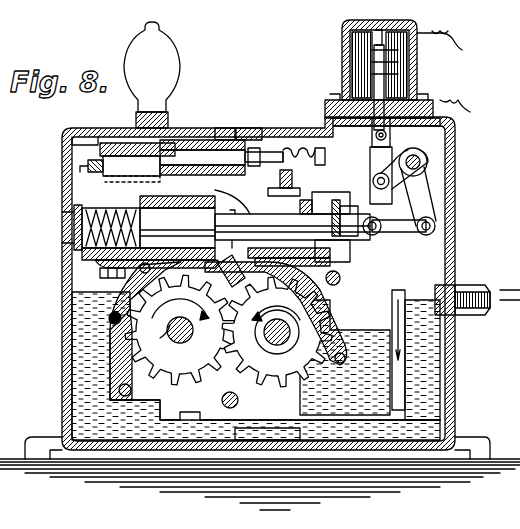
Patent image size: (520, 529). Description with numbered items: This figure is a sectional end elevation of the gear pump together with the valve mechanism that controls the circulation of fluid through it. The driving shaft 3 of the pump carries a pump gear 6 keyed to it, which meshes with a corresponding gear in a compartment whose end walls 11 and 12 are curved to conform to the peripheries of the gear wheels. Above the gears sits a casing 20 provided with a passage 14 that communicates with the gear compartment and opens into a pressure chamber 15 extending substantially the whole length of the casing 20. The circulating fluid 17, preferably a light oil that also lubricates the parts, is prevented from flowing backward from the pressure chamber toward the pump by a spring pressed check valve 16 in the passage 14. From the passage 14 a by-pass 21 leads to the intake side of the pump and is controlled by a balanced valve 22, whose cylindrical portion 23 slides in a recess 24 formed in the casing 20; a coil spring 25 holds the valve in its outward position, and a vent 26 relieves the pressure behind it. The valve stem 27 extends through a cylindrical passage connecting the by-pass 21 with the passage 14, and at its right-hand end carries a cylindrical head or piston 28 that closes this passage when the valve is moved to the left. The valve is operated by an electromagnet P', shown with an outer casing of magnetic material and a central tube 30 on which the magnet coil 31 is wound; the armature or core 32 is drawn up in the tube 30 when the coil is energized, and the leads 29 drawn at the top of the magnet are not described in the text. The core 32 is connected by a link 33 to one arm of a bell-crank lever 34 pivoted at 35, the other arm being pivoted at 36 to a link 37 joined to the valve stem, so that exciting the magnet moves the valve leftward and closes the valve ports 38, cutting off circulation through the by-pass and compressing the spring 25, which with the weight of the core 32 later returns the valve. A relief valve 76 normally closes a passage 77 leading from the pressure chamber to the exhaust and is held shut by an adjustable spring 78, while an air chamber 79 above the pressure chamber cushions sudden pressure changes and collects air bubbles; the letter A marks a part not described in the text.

The driving shaft 3 is at (180, 330).
The pump gear 6 is at (254, 332).
The end wall 11 is at (62, 317).
The end wall 12 is at (400, 300).
The passage 14 is at (222, 140).
The pressure chamber 15 is at (124, 160).
The spring pressed check valve 16 is at (176, 150).
The circulating fluid 17 is at (97, 290).
The casing 20 is at (100, 156).
The by-pass 21 is at (333, 290).
The balanced valve 22 is at (222, 230).
The cylindrical portion 23 is at (183, 222).
The recess 24 is at (66, 228).
The coil spring 25 is at (62, 213).
The vent 26 is at (88, 258).
The valve stem 27 is at (284, 182).
The cylindrical head or piston 28 is at (352, 206).
The wires 29 is at (440, 33).
The central tube 30 is at (370, 56).
The magnet coil 31 is at (372, 44).
The armature or core 32 is at (420, 83).
The link 33 is at (378, 152).
The bell-crank lever 34 is at (421, 197).
The pivot 35 is at (428, 162).
The pivot 36 is at (436, 226).
The link 37 is at (406, 232).
The valve ports 38 is at (322, 240).
The relief valve 76 is at (256, 128).
The passage 77 is at (250, 155).
The adjustable spring 78 is at (296, 150).
The air chamber 79 is at (165, 52).
The electromagnet P' is at (437, 66).
The oil level A is at (447, 370).